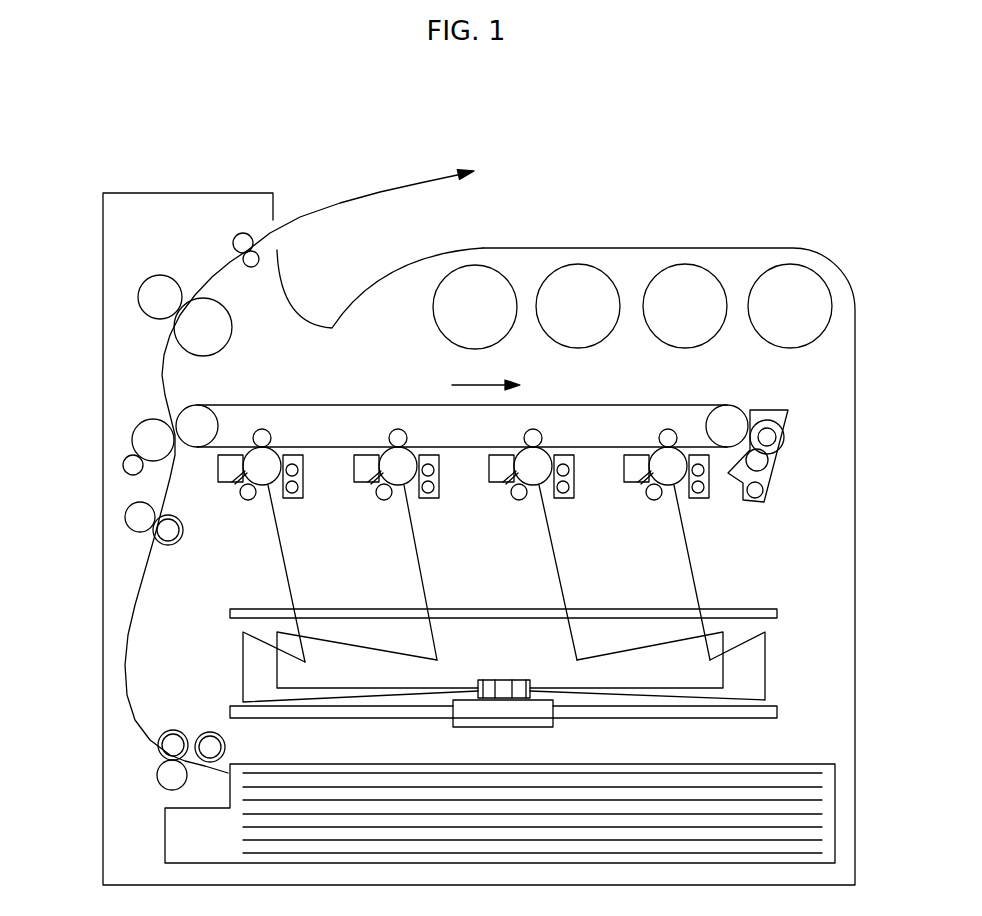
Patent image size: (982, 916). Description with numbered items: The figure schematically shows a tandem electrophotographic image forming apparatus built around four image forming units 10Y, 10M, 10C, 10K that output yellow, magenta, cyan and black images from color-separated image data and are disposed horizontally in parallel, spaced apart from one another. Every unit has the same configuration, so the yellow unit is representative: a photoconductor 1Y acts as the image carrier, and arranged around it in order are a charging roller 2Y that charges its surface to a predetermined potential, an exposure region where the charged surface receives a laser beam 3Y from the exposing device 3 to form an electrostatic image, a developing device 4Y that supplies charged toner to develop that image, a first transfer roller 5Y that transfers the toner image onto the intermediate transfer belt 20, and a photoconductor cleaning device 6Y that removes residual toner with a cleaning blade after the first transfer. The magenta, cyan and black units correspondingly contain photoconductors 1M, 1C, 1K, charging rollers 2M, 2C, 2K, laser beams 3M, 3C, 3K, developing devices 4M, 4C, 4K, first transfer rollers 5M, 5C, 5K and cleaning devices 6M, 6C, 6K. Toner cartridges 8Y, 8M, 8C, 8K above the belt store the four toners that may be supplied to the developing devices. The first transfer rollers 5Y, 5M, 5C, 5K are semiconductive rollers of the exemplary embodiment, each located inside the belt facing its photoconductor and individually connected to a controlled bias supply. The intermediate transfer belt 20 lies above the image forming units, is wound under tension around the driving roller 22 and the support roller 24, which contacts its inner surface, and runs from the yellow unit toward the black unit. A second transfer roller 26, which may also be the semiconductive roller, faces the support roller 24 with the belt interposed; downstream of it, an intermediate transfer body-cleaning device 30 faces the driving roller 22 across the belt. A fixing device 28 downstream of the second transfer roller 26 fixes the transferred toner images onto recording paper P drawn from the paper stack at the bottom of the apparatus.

The photoconductor 1K is at (270, 485).
The photoconductor 1C is at (406, 485).
The photoconductor 1M is at (541, 485).
The photoconductor 1Y is at (676, 485).
The charging roller 2K is at (248, 500).
The charging roller 2C is at (384, 500).
The charging roller 2M is at (519, 500).
The charging roller 2Y is at (654, 500).
The exposing device 3 is at (504, 679).
The laser beam 3K is at (243, 662).
The laser beam 3C is at (333, 648).
The laser beam 3M is at (627, 652).
The laser beam 3Y is at (767, 664).
The developing device 4K is at (304, 498).
The developing device 4C is at (440, 498).
The developing device 4M is at (576, 498).
The developing device 4Y is at (710, 498).
The first transfer roller 5K is at (271, 434).
The first transfer roller 5C is at (407, 434).
The first transfer roller 5M is at (542, 434).
The first transfer roller 5Y is at (672, 430).
The photoconductor cleaning device 6K is at (218, 483).
The photoconductor cleaning device 6C is at (354, 483).
The photoconductor cleaning device 6M is at (489, 483).
The photoconductor cleaning device 6Y is at (624, 483).
The toner cartridge 8K is at (477, 285).
The toner cartridge 8C is at (579, 285).
The toner cartridge 8M is at (685, 285).
The toner cartridge 8Y is at (788, 285).
The image forming unit 10K is at (272, 536).
The image forming unit 10C is at (408, 535).
The image forming unit 10M is at (543, 535).
The image forming unit 10Y is at (678, 511).
The intermediate transfer belt 20 is at (630, 404).
The driving roller 22 is at (728, 406).
The support roller 24 is at (200, 407).
The second transfer roller 26 is at (128, 443).
The fixing device 28 is at (170, 347).
The intermediate transfer body-cleaning device 30 is at (790, 412).
The recording paper P is at (822, 800).